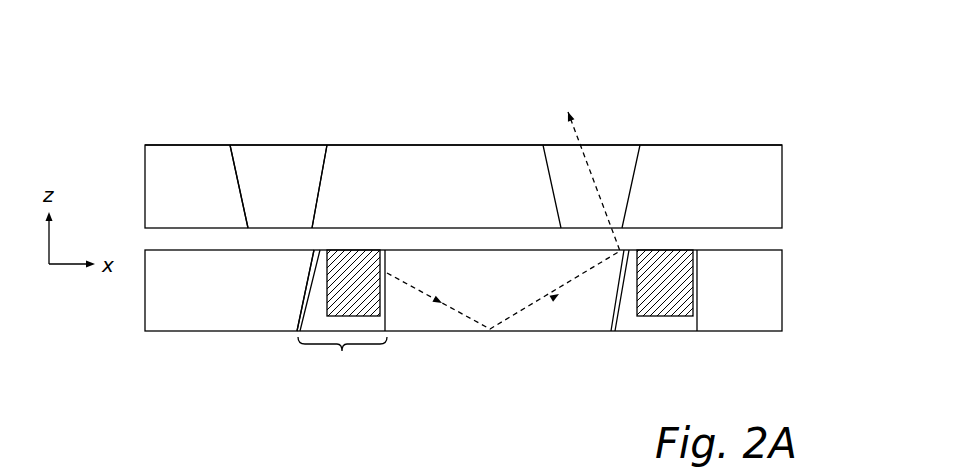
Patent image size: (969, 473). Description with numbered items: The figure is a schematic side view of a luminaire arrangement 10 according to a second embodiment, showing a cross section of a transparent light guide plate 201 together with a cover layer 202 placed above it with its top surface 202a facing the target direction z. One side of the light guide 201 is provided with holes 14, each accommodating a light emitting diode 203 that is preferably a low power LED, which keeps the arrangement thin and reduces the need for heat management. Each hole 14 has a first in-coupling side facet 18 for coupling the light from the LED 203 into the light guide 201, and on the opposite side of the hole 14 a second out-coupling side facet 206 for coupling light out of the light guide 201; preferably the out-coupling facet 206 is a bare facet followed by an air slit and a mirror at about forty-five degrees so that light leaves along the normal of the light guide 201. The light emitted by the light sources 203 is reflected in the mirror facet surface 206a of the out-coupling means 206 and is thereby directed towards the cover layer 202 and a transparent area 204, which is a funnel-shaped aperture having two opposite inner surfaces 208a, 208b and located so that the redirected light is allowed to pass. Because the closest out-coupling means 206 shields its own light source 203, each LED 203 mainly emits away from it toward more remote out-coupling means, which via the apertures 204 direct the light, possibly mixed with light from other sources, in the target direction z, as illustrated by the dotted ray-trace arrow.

The luminaire arrangement 10 is at (484, 221).
The hole 14 is at (342, 361).
The in-coupling side facet 18 is at (385, 298).
The light guide 201 is at (167, 303).
The cover layer 202 is at (185, 168).
The top surface of the cover layer 202a is at (468, 134).
The light source 203 is at (372, 293).
The transparent area / aperture 204 is at (246, 118).
The out-coupling means / out-coupling side facet 206 is at (308, 322).
The mirror facet surface 206a is at (292, 290).
The first inner surface of aperture 208a is at (249, 156).
The second inner surface of aperture 208b is at (311, 178).